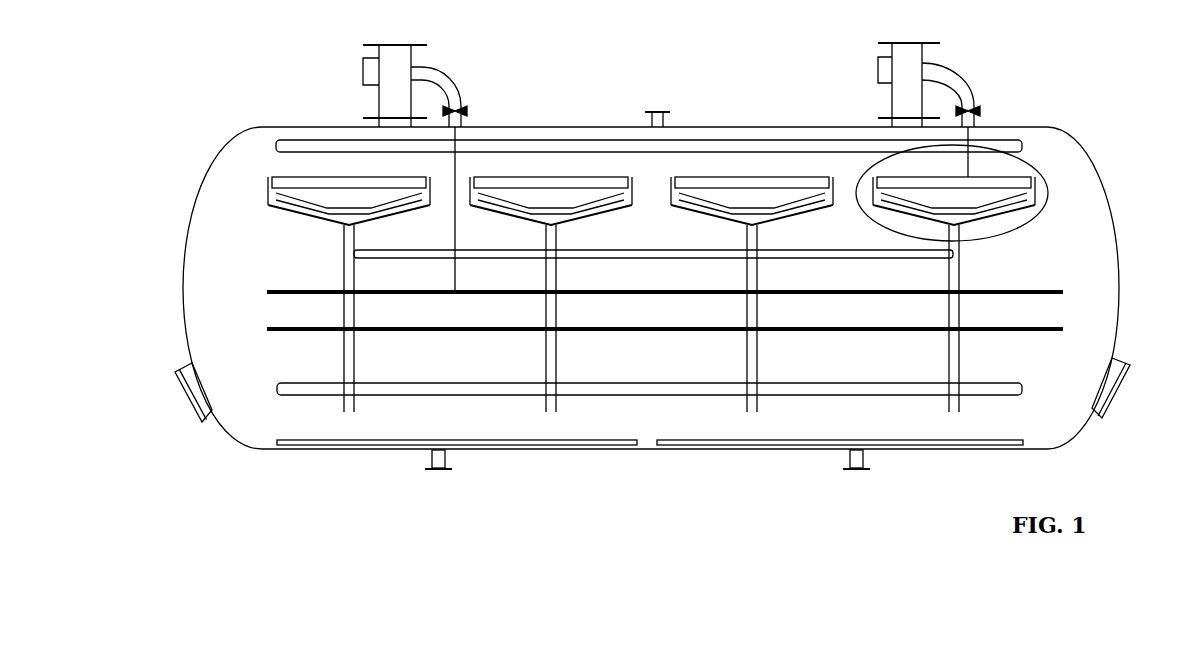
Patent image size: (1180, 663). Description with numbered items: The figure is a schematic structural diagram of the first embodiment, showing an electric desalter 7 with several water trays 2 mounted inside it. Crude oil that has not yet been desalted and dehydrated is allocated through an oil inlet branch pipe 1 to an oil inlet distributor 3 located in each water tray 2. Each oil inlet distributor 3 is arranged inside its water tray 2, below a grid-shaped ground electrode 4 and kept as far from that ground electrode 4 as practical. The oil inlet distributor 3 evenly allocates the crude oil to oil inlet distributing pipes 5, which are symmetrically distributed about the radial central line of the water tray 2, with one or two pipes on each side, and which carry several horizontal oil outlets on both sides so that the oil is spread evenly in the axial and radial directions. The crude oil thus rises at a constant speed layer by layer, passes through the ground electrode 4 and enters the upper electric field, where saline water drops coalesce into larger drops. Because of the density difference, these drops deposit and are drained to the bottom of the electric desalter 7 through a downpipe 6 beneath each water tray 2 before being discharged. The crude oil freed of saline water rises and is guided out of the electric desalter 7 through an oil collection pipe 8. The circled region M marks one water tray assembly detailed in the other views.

The oil inlet branch pipe 1 is at (653, 248).
The water tray 2 is at (472, 176).
The oil inlet distributor 3 is at (752, 212).
The ground electrode 4 is at (798, 185).
The oil inlet distributing pipe 5 is at (480, 197).
The downpipe 6 is at (960, 310).
The electric desalter 7 is at (1112, 205).
The oil collection pipe 8 is at (578, 143).
The enlarged detail region M is at (1030, 158).